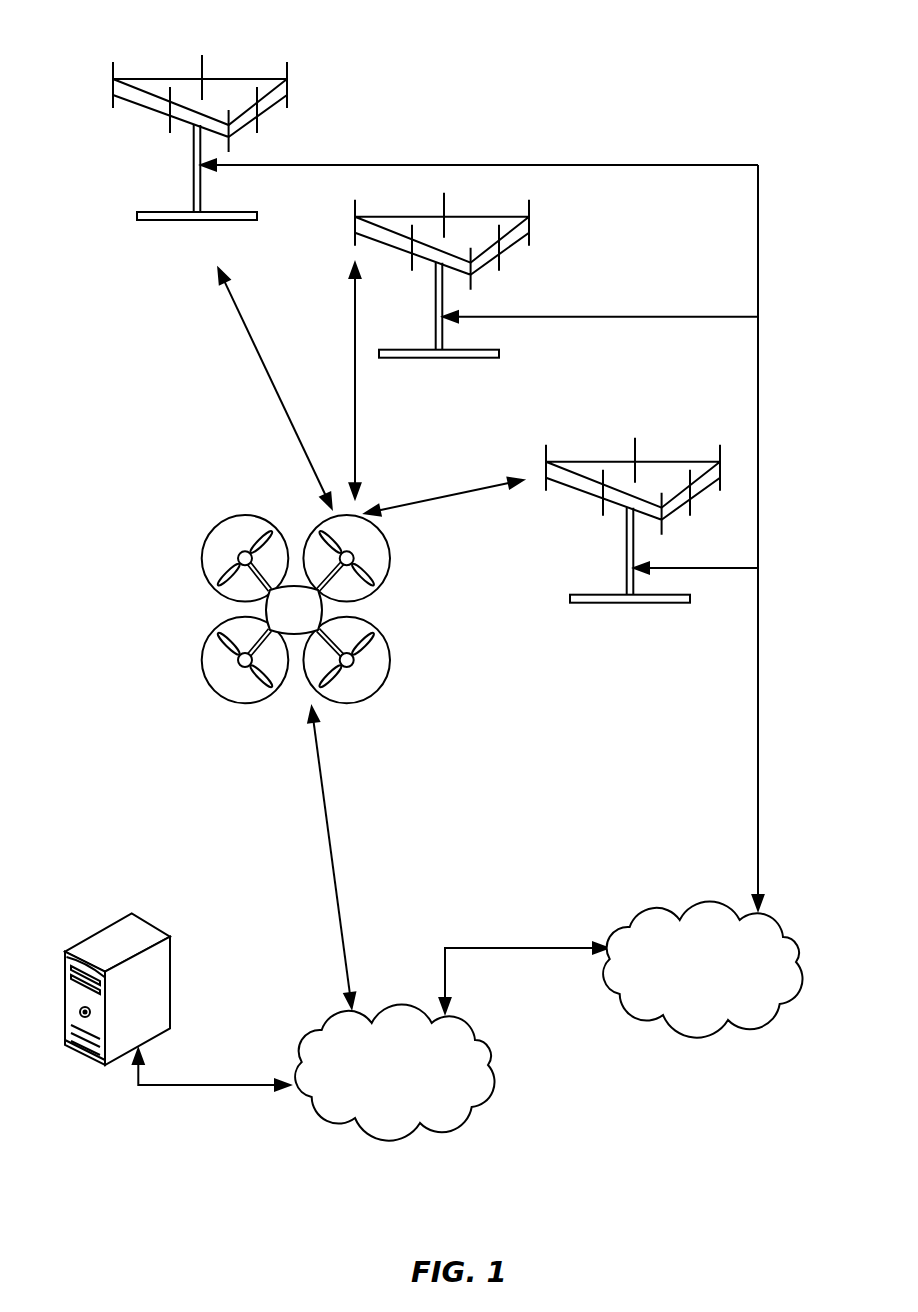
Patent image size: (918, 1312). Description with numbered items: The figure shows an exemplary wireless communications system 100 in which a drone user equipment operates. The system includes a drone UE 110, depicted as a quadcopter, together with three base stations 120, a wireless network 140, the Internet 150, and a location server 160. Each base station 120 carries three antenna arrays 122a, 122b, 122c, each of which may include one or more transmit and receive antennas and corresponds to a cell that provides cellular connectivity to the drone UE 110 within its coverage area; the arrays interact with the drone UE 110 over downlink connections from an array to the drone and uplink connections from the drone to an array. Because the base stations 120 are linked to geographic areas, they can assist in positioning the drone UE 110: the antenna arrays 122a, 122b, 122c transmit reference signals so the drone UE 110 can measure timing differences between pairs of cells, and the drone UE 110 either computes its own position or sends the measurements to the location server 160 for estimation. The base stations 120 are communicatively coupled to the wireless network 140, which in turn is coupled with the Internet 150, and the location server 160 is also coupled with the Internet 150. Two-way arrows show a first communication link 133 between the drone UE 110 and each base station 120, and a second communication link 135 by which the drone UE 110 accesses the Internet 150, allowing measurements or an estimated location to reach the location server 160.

The wireless communications system 100 is at (762, 74).
The drone UE 110 is at (202, 557).
The base station 120 is at (158, 222).
The antenna array 122a is at (228, 77).
The antenna array 122b is at (162, 113).
The antenna array 122c is at (268, 108).
The first communication link 133 is at (272, 385).
The second communication link 135 is at (338, 888).
The wireless network 140 is at (707, 1027).
The Internet 150 is at (393, 1132).
The location server 160 is at (98, 932).